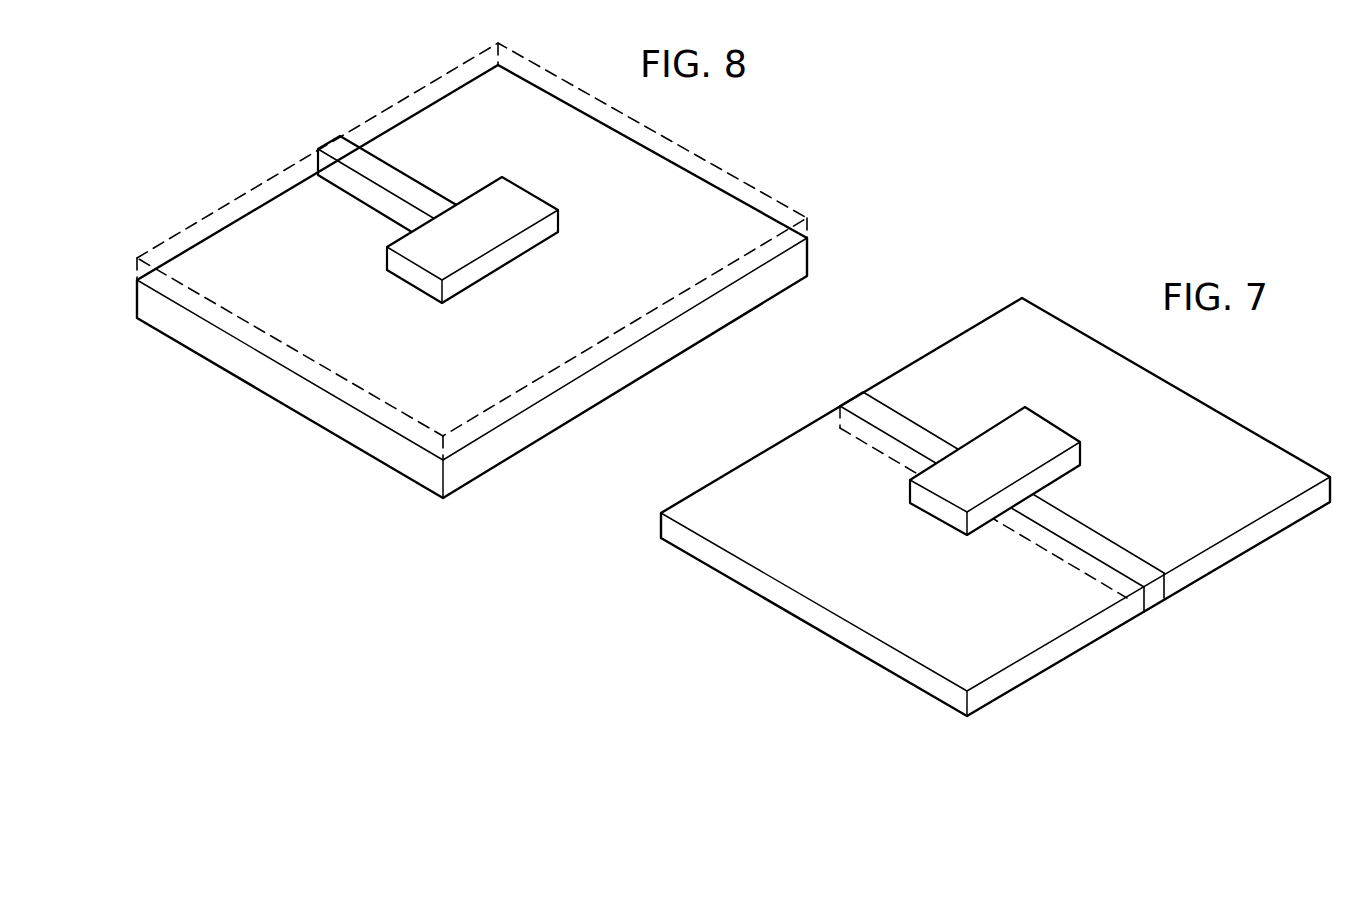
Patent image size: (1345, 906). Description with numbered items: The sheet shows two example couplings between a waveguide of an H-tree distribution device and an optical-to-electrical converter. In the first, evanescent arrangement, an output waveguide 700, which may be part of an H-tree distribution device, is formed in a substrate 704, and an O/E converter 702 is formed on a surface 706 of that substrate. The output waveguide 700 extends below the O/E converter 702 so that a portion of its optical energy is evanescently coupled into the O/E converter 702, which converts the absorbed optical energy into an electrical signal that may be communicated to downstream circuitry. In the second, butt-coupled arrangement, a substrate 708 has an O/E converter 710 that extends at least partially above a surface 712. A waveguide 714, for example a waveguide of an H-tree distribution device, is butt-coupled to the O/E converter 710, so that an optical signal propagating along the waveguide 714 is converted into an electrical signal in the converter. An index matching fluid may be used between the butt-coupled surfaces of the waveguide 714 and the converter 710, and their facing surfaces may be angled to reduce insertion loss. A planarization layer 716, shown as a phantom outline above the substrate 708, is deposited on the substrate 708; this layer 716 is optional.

In FIG. 7, the output waveguide 700 is at (862, 403).
In FIG. 7, the O/E converter 702 is at (1048, 433).
In FIG. 7, the substrate 704 is at (700, 560).
In FIG. 7, the surface 706 is at (1228, 433).
In FIG. 8, the substrate 708 is at (178, 328).
In FIG. 8, the O/E converter 710 is at (527, 202).
In FIG. 8, the surface 712 is at (545, 389).
In FIG. 8, the waveguide 714 is at (343, 151).
In FIG. 8, the planarization layer 716 is at (735, 190).